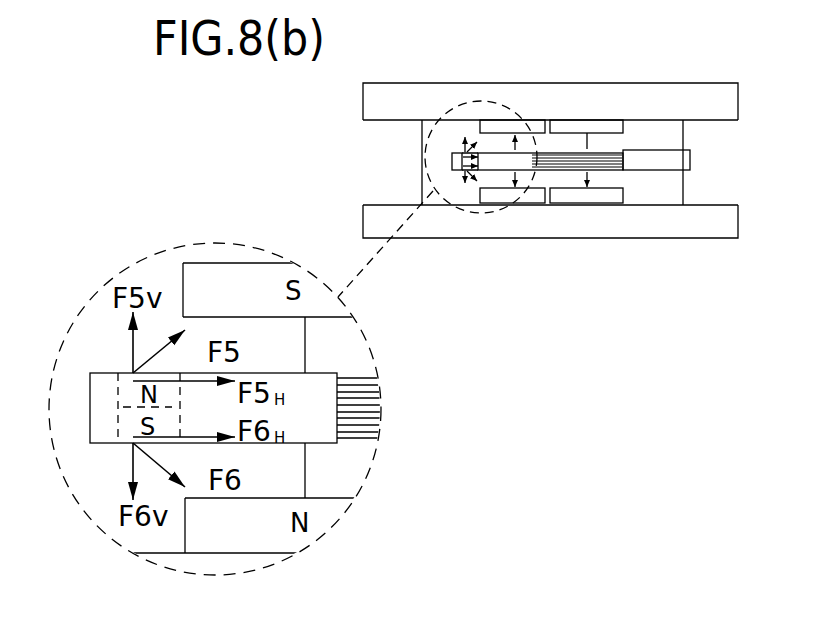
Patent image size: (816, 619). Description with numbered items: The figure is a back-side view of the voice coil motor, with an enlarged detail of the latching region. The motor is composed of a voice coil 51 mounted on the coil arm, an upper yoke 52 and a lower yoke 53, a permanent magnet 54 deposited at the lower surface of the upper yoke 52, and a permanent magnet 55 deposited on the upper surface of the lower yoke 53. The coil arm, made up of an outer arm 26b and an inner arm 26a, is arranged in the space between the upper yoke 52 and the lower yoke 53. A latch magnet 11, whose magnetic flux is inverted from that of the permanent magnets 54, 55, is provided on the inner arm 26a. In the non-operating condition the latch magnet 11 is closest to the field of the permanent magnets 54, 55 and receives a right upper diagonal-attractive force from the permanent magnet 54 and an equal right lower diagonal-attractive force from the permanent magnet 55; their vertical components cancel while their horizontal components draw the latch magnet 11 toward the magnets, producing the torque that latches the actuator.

The latch magnet 11 is at (462, 172).
The inner arm 26a is at (452, 163).
The outer arm 26b is at (668, 164).
The voice coil 51 is at (530, 171).
The upper yoke 52 is at (647, 95).
The lower yoke 53 is at (629, 219).
The permanent magnet 54 is at (522, 127).
The permanent magnet 55 is at (484, 183).